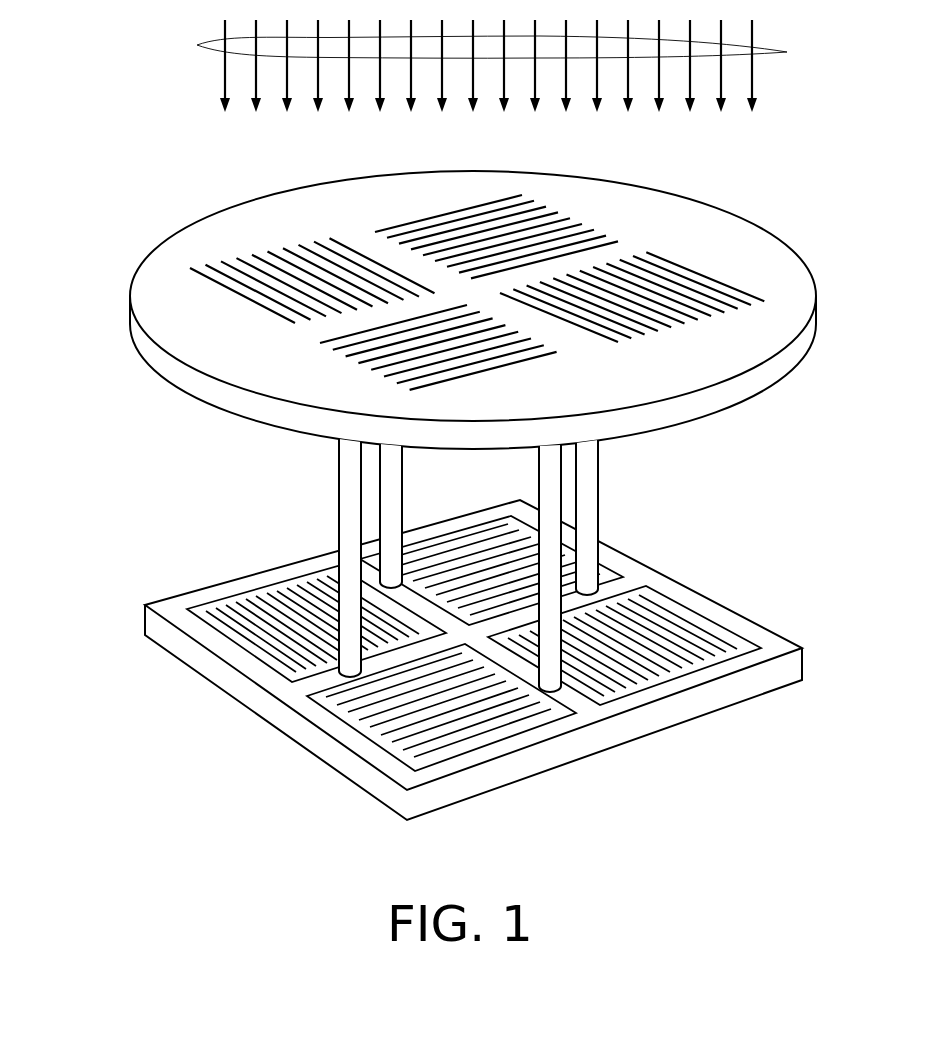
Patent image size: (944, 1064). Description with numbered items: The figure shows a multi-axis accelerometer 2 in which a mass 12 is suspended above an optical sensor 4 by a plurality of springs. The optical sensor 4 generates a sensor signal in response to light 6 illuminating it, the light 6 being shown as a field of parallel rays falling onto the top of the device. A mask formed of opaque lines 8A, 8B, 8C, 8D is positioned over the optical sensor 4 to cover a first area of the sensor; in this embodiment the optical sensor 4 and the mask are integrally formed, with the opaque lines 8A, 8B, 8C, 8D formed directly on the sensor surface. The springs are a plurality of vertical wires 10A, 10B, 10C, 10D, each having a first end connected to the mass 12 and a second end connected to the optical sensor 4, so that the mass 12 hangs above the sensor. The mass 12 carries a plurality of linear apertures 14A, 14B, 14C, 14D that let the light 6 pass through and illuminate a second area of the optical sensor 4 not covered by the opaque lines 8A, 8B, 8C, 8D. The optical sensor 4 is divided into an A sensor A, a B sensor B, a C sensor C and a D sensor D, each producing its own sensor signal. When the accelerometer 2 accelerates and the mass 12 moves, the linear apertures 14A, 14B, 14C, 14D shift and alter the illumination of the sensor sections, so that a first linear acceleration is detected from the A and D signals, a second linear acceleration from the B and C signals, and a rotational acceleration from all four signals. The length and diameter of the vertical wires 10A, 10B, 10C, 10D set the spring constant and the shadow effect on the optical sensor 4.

The multi-axis accelerometer 2 is at (456, 282).
The optical sensor 4 is at (486, 657).
The light 6 is at (787, 52).
The opaque line of mask 8A is at (240, 632).
The opaque line of mask 8B is at (600, 567).
The opaque line of mask 8C is at (470, 742).
The opaque line of mask 8D is at (718, 640).
The vertical wire 10A is at (350, 516).
The vertical wire 10B is at (382, 472).
The vertical wire 10C is at (548, 678).
The vertical wire 10D is at (598, 488).
The mass 12 is at (803, 297).
The linear aperture 14A is at (185, 262).
The linear aperture 14B is at (522, 185).
The linear aperture 14C is at (407, 398).
The linear aperture 14D is at (605, 347).
The A sensor A is at (300, 624).
The B sensor B is at (520, 550).
The C sensor C is at (419, 741).
The D sensor D is at (658, 631).